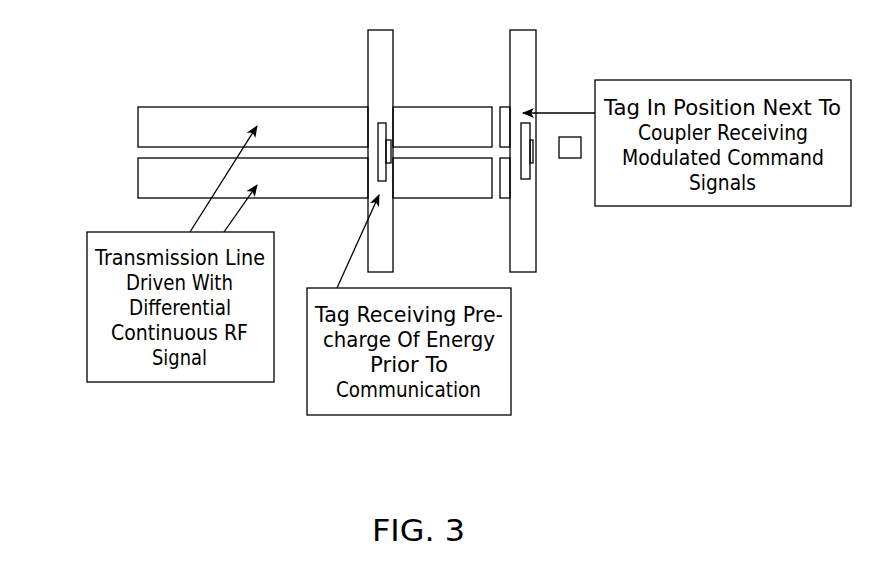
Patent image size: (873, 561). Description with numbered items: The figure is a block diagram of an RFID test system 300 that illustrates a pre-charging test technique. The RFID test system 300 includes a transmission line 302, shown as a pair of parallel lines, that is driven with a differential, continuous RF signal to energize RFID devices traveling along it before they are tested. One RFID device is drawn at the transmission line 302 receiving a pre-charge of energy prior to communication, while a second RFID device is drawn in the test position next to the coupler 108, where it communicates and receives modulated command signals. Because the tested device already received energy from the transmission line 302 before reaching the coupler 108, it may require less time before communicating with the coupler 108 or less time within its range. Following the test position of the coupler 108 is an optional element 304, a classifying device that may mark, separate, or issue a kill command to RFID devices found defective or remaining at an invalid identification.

The RFID test system 300 is at (588, 310).
The transmission line 302 is at (113, 147).
The element 304 is at (570, 137).
The coupler 108 is at (497, 99).